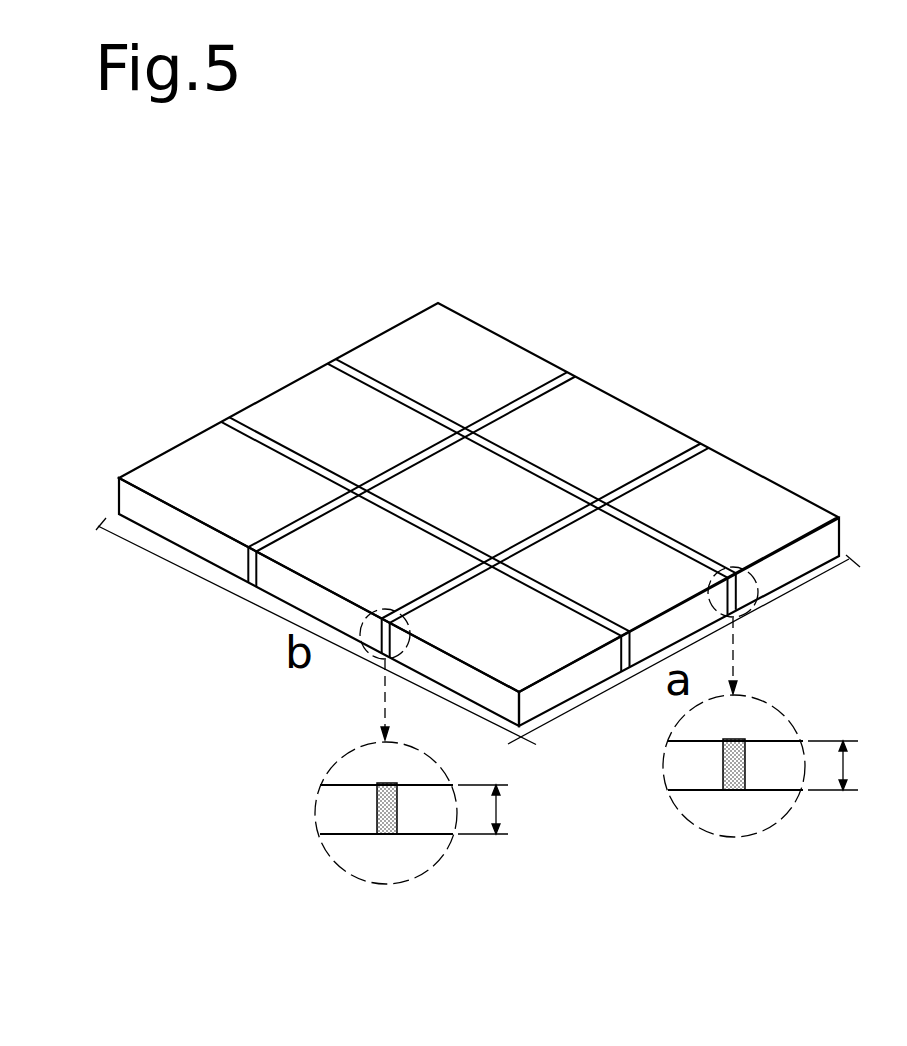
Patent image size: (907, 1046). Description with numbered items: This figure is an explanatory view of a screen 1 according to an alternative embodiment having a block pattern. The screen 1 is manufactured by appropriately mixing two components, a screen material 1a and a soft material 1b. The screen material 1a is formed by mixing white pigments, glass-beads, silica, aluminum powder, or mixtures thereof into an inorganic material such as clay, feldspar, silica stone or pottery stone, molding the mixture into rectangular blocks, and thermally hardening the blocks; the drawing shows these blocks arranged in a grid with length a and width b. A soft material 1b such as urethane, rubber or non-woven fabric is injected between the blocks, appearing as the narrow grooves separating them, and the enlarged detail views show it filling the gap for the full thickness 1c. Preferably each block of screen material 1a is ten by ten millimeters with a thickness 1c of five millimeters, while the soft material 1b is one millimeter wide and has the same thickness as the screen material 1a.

The screen 1 is at (107, 472).
The screen material 1a is at (390, 352).
The soft material 1b is at (247, 432).
The thickness 1c is at (600, 741).